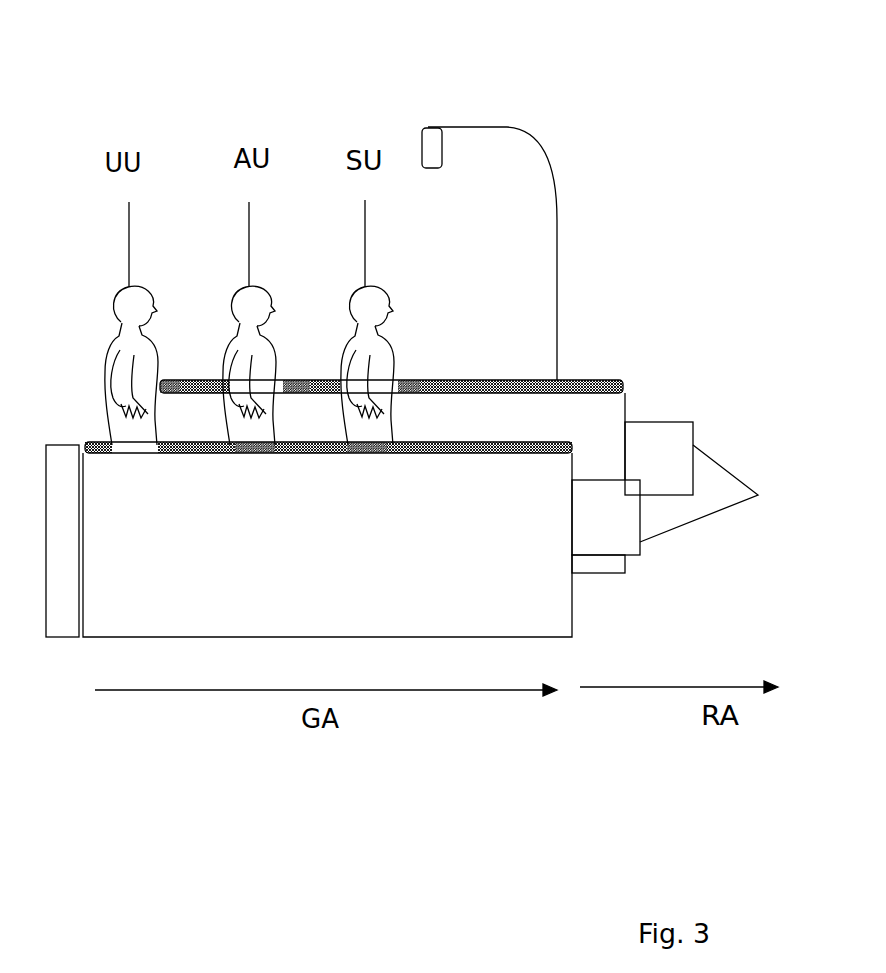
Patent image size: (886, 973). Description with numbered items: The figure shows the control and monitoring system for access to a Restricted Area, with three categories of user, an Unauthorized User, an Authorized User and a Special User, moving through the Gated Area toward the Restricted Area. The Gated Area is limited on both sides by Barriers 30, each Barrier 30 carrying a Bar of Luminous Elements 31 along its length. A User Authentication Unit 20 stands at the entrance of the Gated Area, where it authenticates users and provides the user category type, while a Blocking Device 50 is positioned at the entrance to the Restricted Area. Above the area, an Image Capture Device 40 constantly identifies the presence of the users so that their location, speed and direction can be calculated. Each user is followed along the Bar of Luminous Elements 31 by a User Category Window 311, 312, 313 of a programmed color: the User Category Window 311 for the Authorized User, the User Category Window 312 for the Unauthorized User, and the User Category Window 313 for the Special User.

The User Authentication Unit 20 is at (62, 637).
The Barrier 30 is at (625, 402).
The Bar of Luminous Elements 31 is at (612, 380).
The Image Capture Device 40 is at (428, 127).
The Blocking Device 50 is at (717, 482).
The User Category Window 311 is at (297, 380).
The User Category Window 312 is at (169, 380).
The User Category Window 313 is at (410, 380).